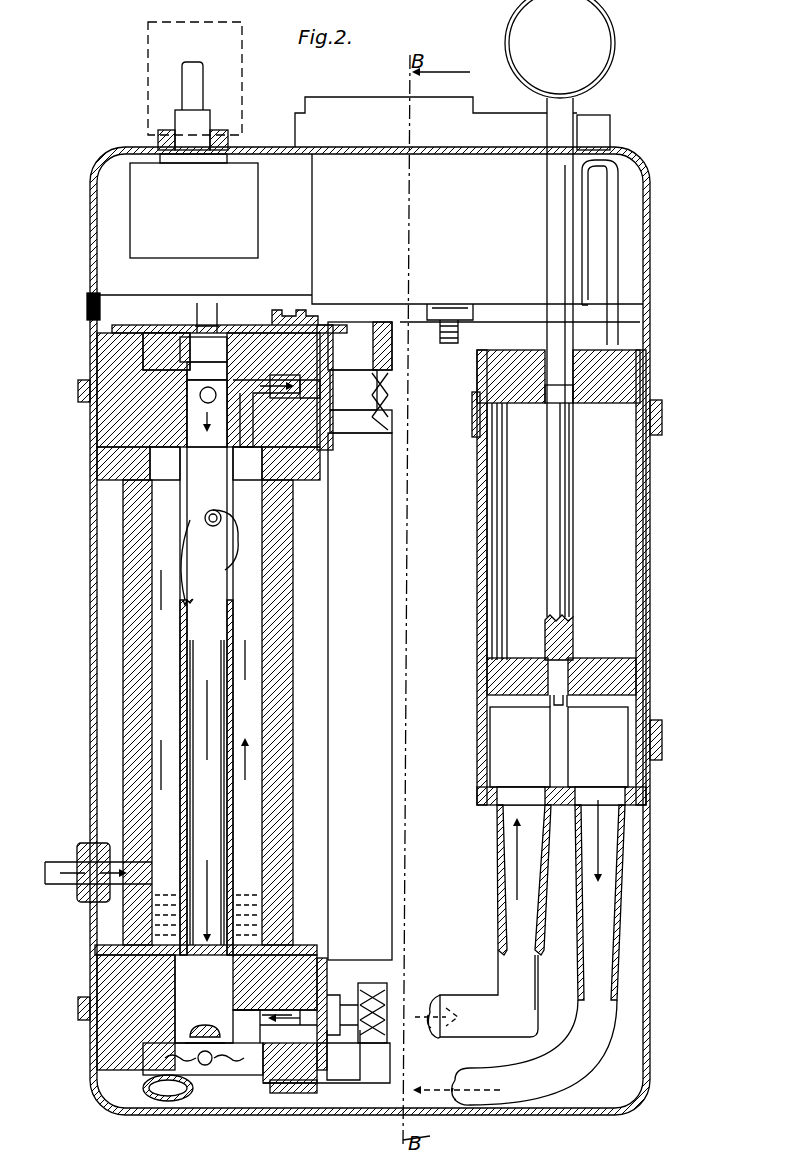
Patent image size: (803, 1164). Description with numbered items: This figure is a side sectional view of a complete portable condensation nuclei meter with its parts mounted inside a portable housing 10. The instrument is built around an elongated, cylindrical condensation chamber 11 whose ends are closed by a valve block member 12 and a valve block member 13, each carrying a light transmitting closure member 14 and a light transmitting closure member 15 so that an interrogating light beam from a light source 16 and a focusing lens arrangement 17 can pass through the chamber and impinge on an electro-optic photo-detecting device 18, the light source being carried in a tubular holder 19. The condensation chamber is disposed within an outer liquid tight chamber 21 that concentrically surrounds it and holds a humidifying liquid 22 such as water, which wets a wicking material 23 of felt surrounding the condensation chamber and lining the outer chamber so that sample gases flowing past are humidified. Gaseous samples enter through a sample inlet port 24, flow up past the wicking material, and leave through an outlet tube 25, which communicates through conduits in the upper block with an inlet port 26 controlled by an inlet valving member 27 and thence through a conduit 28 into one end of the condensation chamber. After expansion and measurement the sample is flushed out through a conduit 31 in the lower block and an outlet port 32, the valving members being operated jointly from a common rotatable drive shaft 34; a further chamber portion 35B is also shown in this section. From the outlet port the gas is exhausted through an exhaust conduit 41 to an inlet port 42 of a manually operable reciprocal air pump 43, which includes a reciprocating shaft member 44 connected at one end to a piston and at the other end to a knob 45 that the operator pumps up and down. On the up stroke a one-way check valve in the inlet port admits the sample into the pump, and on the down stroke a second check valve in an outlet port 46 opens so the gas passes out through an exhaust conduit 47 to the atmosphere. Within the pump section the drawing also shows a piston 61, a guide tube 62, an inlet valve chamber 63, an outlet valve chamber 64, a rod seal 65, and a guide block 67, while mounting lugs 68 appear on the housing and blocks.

The housing 10 is at (92, 330).
The condensation chamber 11 is at (210, 700).
The valve block member 12 is at (100, 352).
The valve block member 13 is at (110, 972).
The light transmitting closure member 14 is at (180, 333).
The light transmitting closure member 15 is at (160, 1060).
The light source 16 is at (200, 1075).
The focusing lens arrangement 17 is at (203, 1033).
The electro-optic photo-detecting device 18 is at (205, 325).
The tubular holder 19 is at (207, 1065).
The outer liquid tight chamber 21 is at (123, 662).
The humidifying liquid 22 is at (242, 888).
The wicking material 23 is at (252, 720).
The sample inlet port 24 is at (72, 860).
The outlet tube 25 is at (222, 521).
The inlet port 26 is at (320, 405).
The inlet valving member 27 is at (350, 385).
The conduit 28 is at (246, 380).
The conduit 31 is at (287, 1085).
The outlet port 32 is at (330, 985).
The rotatable drive shaft 34 is at (352, 1045).
The chamber 35B is at (380, 883).
The exhaust conduit 41 is at (465, 1005).
The inlet port 42 is at (498, 826).
The air pump 43 is at (512, 598).
The reciprocating shaft member 44 is at (575, 112).
The knob 45 is at (612, 44).
The outlet port 46 is at (625, 840).
The exhaust conduit 47 is at (506, 1080).
The piston 61 is at (588, 665).
The guide tube 62 is at (510, 405).
The inlet valve chamber 63 is at (505, 765).
The outlet valve chamber 64 is at (615, 725).
The rod seal 65 is at (575, 398).
The guide block 67 is at (585, 155).
The mounting lugs 68 is at (278, 310).